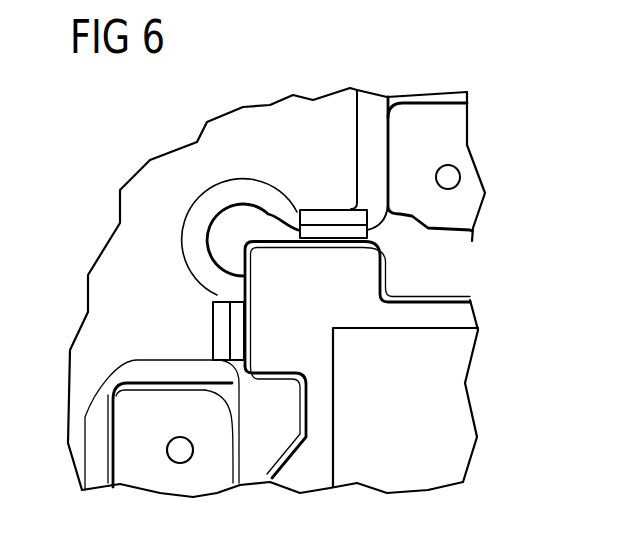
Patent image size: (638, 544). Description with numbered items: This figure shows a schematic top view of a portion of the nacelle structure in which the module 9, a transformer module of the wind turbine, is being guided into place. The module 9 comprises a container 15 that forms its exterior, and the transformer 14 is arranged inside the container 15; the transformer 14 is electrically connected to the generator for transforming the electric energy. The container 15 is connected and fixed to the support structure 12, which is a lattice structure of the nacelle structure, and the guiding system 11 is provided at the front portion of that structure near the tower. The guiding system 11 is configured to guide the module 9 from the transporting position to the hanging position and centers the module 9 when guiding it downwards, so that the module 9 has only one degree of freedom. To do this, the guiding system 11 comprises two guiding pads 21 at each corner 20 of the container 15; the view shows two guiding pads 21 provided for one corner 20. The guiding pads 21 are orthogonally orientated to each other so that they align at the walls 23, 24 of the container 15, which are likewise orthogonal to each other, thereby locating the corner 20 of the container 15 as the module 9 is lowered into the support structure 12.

The module 9 is at (250, 389).
The guiding system 11 is at (209, 328).
The support structure 12 is at (168, 173).
The transformer 14 is at (448, 405).
The container 15 is at (307, 425).
The corner 20 is at (270, 237).
The guiding pads 21 is at (330, 233).
The wall 23 is at (293, 248).
The wall 24 is at (243, 277).